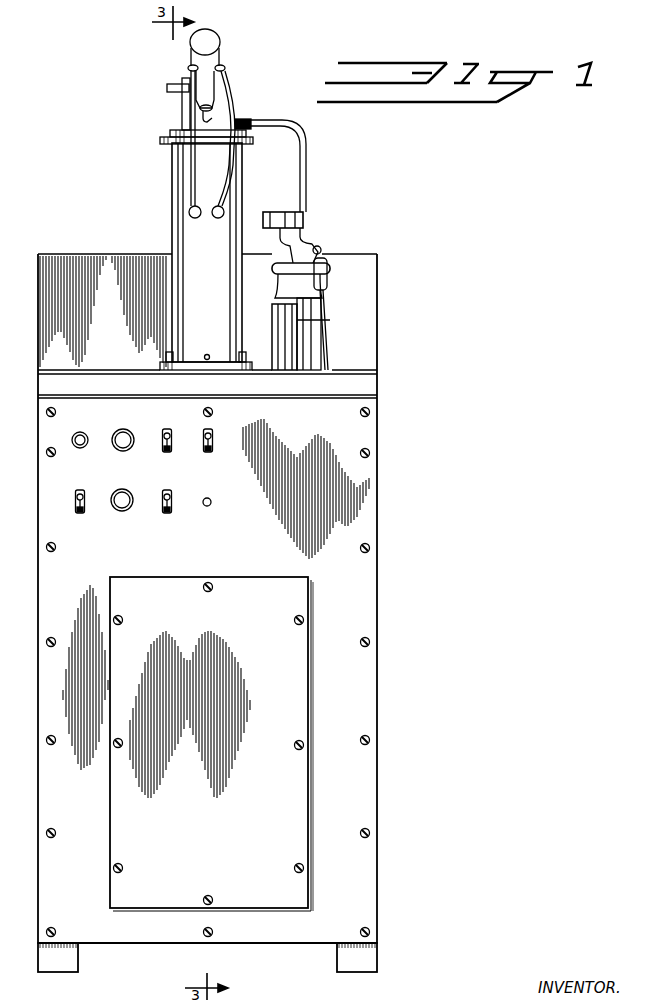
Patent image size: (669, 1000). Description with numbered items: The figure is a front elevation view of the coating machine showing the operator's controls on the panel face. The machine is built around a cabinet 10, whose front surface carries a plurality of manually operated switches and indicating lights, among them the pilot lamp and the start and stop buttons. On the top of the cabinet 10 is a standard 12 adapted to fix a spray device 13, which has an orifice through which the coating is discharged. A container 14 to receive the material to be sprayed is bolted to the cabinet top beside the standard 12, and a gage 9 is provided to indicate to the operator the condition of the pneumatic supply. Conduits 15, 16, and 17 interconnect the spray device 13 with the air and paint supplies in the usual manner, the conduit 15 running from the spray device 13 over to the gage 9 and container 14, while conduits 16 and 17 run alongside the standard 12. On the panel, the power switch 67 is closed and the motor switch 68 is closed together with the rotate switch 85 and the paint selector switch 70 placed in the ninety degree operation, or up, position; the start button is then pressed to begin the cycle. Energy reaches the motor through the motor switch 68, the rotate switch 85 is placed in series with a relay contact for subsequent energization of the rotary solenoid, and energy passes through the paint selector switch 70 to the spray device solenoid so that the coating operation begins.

The gage 9 is at (290, 212).
The cabinet 10 is at (377, 517).
The standard 12 is at (172, 200).
The spray device 13 is at (227, 47).
The container 14 is at (331, 312).
The conduit 15 is at (306, 181).
The conduit 16 is at (233, 108).
The conduit 17 is at (193, 122).
The power switch 67 is at (97, 513).
The motor switch 68 is at (164, 451).
The paint selector switch 70 is at (164, 513).
The rotate switch 85 is at (204, 451).